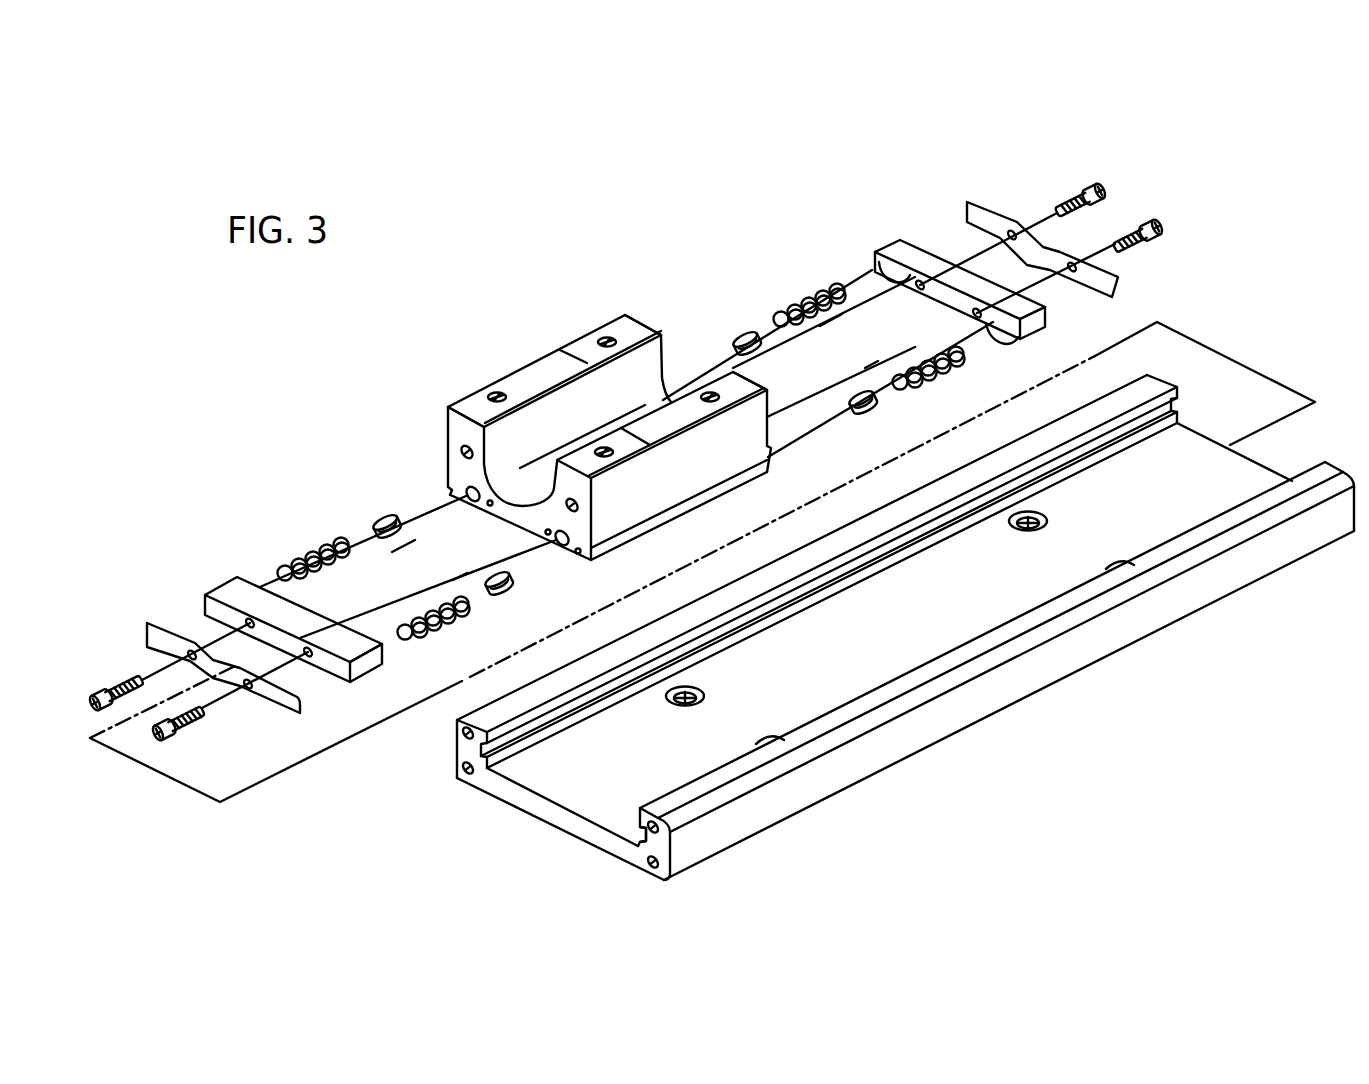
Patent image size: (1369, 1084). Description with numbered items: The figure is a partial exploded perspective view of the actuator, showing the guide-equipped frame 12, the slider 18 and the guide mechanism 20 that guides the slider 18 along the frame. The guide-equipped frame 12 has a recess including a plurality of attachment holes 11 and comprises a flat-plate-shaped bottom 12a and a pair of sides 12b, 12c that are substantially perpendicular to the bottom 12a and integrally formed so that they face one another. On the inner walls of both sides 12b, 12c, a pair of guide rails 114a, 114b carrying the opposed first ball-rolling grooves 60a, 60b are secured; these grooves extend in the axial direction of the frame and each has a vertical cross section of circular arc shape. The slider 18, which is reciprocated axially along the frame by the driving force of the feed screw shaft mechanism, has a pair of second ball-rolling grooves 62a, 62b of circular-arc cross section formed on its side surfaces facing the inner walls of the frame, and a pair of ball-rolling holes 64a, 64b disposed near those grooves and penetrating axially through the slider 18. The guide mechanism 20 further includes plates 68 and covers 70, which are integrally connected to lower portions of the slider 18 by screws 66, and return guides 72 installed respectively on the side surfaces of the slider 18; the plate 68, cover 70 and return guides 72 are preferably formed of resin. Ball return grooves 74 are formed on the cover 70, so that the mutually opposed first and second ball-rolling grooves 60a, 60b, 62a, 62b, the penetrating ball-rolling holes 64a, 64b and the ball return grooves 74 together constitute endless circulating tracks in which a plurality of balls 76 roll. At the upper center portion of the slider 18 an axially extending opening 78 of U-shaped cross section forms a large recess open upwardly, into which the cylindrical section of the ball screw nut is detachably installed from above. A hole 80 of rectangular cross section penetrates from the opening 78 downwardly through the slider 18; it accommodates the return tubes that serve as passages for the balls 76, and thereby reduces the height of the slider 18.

The attachment holes 11 is at (700, 690).
The guide-equipped frame 12 is at (875, 638).
The bottom 12a is at (553, 822).
The side 12b is at (786, 576).
The side 12c is at (962, 681).
The slider 18 is at (574, 447).
The guide mechanism 20 is at (626, 458).
The first ball-rolling groove 60a is at (540, 728).
The first ball-rolling groove 60b is at (634, 828).
The second ball-rolling groove 62a is at (449, 484).
The second ball-rolling groove 62b is at (622, 534).
The ball-rolling hole 64a is at (470, 503).
The ball-rolling hole 64b is at (566, 547).
The screws 66 is at (113, 682).
The plate 68 is at (163, 628).
The cover 70 is at (228, 588).
The return guide 72 is at (388, 512).
The ball return grooves 74 is at (883, 276).
The balls 76 is at (621, 480).
The opening 78 is at (545, 428).
The hole 80 is at (540, 503).
The guide rail 114a is at (435, 747).
The guide rail 114b is at (666, 855).